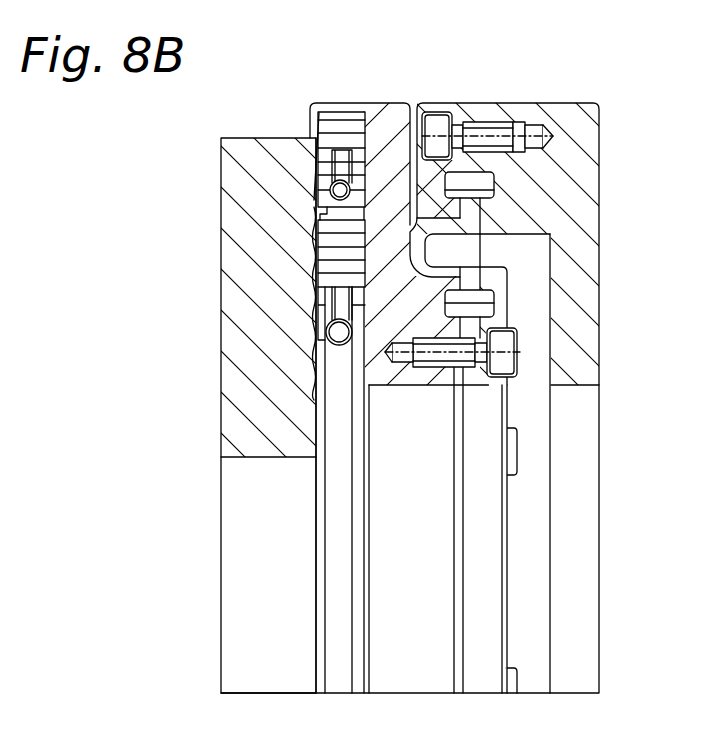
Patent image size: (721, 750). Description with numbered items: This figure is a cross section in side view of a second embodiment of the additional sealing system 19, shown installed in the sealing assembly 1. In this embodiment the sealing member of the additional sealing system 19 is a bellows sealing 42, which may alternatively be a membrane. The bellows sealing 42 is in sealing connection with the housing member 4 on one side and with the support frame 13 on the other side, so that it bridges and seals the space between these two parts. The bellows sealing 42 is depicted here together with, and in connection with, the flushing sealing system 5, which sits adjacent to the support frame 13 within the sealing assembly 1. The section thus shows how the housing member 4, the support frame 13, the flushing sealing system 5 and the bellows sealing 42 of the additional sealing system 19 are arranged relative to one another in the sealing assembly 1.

The sealing assembly 1 is at (390, 375).
The housing member 4 is at (578, 184).
The flushing sealing system 5 is at (301, 99).
The support frame 13 is at (387, 152).
The additional sealing system 19 is at (468, 97).
The bellows sealing 42 is at (470, 302).